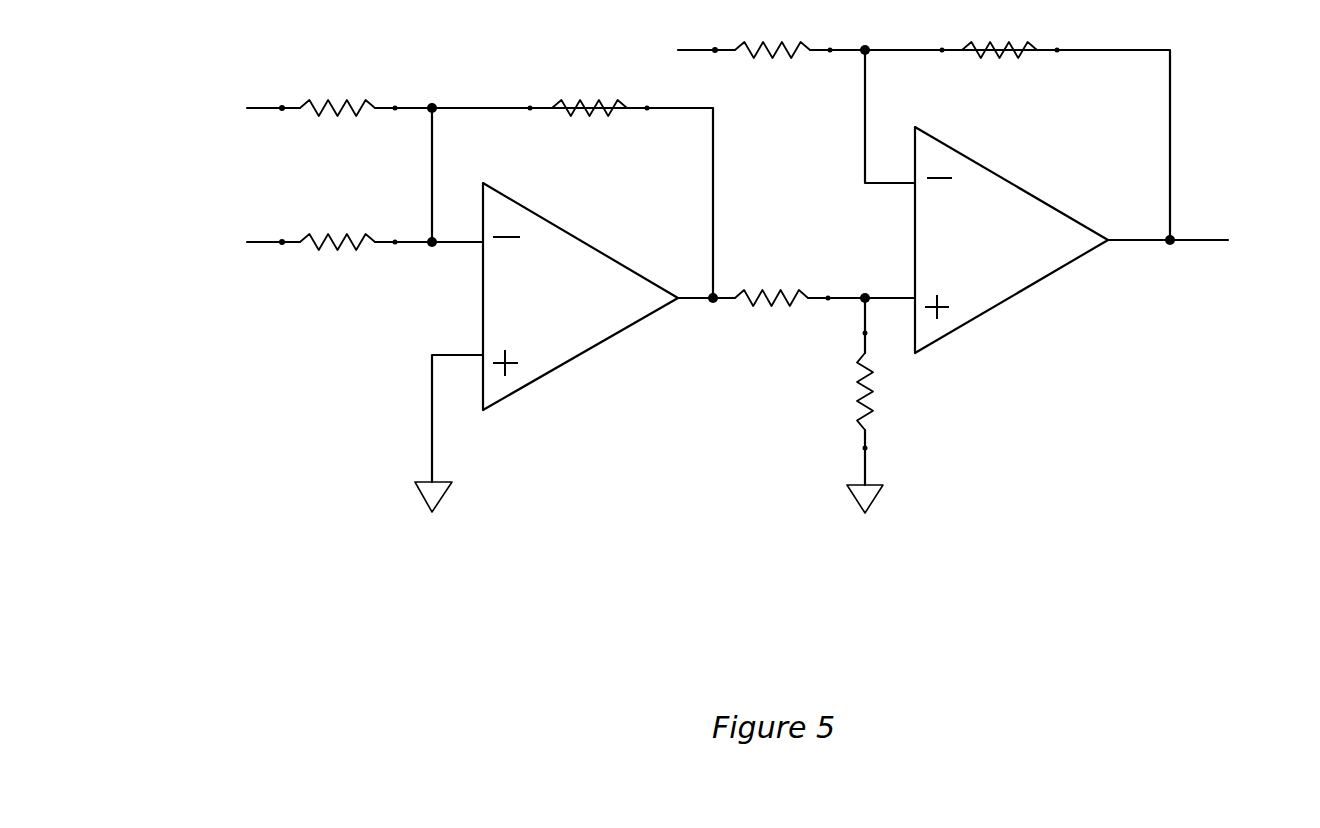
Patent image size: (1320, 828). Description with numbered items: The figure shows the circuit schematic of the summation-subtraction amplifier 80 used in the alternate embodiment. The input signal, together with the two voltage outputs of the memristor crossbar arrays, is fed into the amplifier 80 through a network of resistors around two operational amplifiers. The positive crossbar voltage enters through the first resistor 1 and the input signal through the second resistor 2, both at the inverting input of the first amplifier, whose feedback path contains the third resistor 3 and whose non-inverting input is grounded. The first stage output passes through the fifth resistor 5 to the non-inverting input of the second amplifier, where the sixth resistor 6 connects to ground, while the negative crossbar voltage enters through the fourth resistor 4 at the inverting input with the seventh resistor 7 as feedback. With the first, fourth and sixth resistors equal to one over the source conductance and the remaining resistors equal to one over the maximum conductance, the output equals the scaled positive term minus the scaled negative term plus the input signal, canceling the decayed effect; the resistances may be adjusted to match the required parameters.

The summation-subtraction amplifier circuit 80 is at (739, 320).
The resistor R1 1 is at (337, 89).
The resistor R2 2 is at (337, 223).
The resistor R3 3 is at (589, 88).
The resistor R4 4 is at (772, 31).
The resistor R5 5 is at (771, 279).
The resistor R6 6 is at (844, 391).
The resistor R7 7 is at (999, 31).